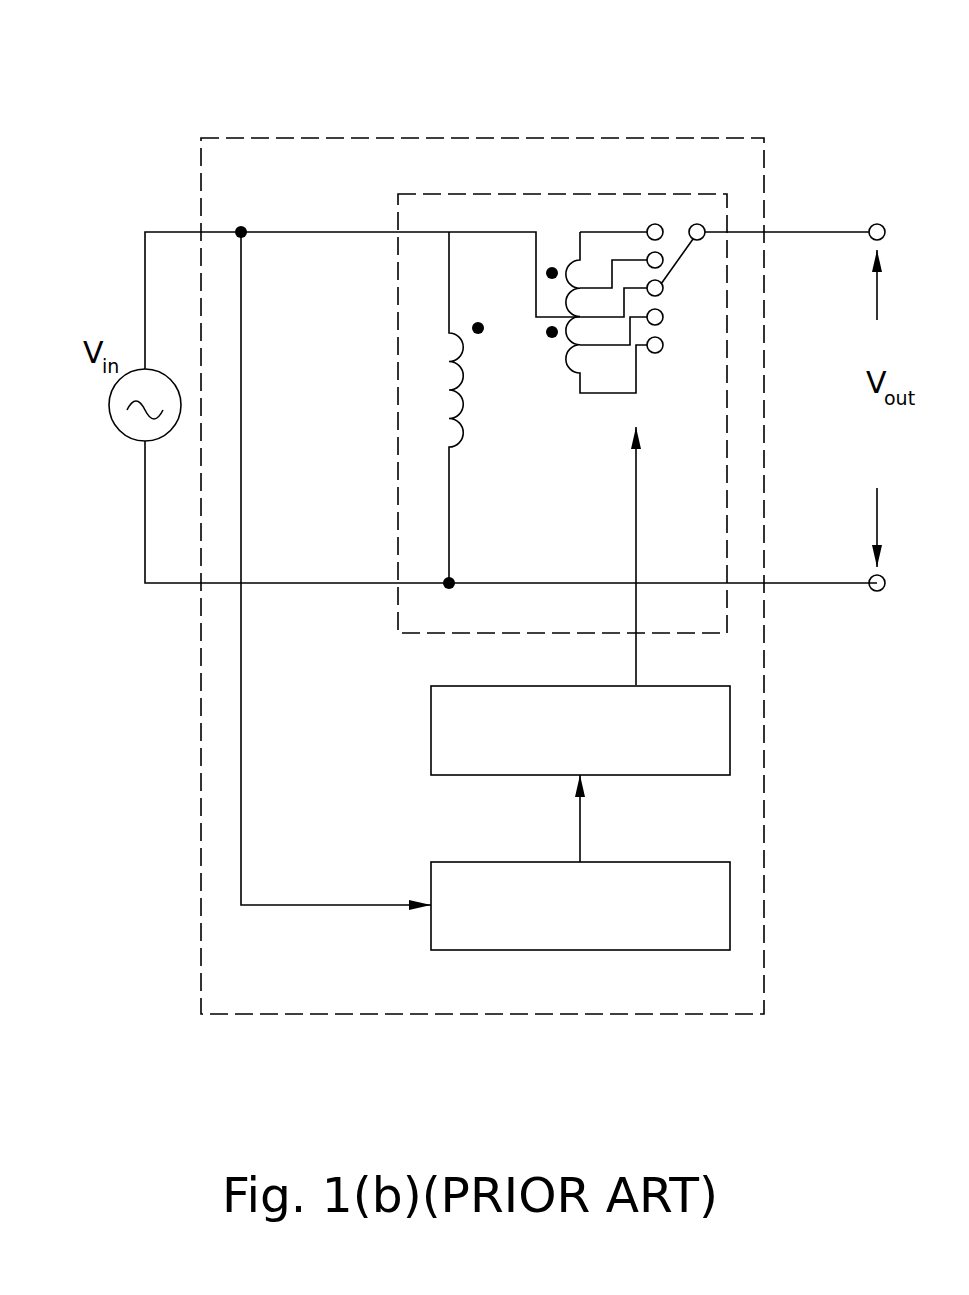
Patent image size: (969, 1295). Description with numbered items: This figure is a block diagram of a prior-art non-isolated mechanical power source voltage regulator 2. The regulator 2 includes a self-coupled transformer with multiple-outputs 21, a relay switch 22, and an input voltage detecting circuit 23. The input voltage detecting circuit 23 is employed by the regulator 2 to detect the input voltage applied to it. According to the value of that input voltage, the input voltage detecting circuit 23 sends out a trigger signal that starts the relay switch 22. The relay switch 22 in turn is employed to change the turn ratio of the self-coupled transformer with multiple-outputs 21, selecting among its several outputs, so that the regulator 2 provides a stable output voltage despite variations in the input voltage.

The non-isolated mechanical power source voltage regulator 2 is at (267, 190).
The self-coupled transformer with multiple-outputs 21 is at (657, 213).
The relay switch 22 is at (450, 725).
The input voltage detecting circuit 23 is at (439, 900).